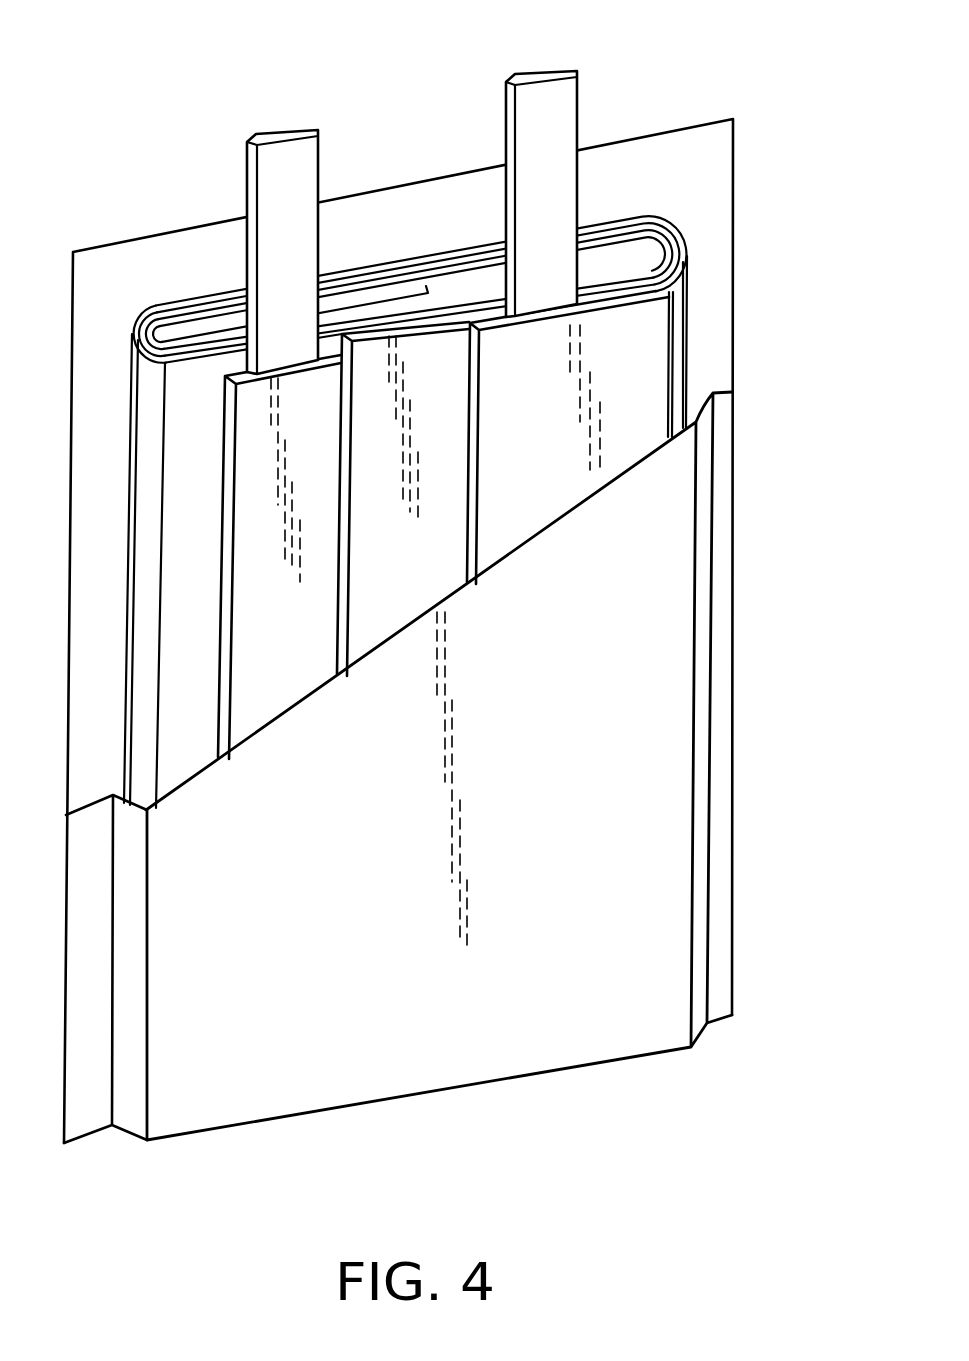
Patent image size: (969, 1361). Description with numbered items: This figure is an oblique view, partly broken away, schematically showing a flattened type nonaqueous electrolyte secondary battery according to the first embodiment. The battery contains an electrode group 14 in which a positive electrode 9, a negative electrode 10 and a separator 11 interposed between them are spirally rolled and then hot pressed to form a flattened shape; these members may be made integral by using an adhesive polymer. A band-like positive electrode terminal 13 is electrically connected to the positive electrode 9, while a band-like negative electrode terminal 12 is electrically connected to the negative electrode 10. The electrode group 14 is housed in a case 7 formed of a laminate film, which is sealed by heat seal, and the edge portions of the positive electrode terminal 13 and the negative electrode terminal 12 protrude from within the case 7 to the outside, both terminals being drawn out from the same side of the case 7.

The case 7 is at (645, 805).
The positive electrode 9 is at (658, 353).
The negative electrode 10 is at (308, 570).
The separator 11 is at (438, 436).
The negative electrode terminal 12 is at (282, 168).
The positive electrode terminal 13 is at (544, 98).
The electrode group 14 is at (797, 327).